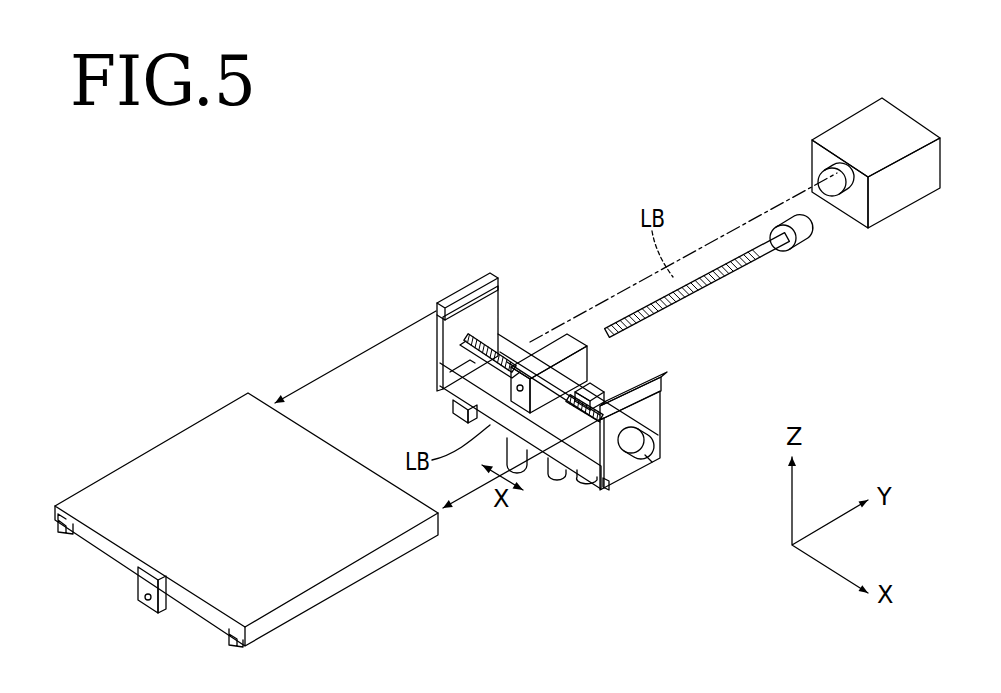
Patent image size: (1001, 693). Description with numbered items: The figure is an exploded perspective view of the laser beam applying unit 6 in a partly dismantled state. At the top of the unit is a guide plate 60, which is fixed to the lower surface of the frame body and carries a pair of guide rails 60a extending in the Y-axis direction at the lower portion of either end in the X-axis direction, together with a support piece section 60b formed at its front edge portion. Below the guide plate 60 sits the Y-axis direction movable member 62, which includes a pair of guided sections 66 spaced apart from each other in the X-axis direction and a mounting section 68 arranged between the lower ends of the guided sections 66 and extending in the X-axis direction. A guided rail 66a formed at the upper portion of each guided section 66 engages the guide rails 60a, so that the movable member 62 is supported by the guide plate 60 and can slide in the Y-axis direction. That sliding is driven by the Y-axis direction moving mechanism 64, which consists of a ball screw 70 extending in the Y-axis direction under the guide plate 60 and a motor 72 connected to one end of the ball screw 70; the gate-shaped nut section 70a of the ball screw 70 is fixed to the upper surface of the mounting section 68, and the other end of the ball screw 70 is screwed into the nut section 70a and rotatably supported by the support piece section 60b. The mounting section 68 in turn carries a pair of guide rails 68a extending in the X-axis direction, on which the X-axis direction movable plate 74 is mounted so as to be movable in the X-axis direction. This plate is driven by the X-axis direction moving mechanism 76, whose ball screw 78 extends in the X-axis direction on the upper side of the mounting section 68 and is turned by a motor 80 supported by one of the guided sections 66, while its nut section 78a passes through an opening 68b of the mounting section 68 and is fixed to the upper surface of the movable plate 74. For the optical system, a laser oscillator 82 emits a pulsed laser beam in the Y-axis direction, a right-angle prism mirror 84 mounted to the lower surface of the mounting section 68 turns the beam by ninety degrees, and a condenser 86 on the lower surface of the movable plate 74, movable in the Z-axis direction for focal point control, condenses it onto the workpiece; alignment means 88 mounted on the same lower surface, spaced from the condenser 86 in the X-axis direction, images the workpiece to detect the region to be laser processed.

The laser beam applying unit 6 is at (312, 336).
The guide plate 60 is at (168, 458).
The guide rails 60a is at (57, 530).
The support piece section 60b is at (137, 600).
The Y-axis direction movable member 62 is at (607, 492).
The Y-axis direction moving mechanism 64 is at (826, 257).
The guided sections 66 is at (482, 298).
The guided rail 66a is at (467, 292).
The mounting section 68 is at (513, 350).
The guide rails 68a is at (612, 478).
The opening 68b is at (453, 380).
The ball screw 70 is at (737, 268).
The nut section 70a is at (575, 366).
The motor 72 is at (808, 240).
The X-axis direction movable plate 74 is at (598, 462).
The X-axis direction moving mechanism 76 is at (658, 462).
The ball screw 78 is at (470, 342).
The nut section 78a is at (612, 372).
The motor 80 is at (647, 450).
The laser oscillator 82 is at (852, 128).
The right-angle prism mirror 84 is at (455, 412).
The condenser 86 is at (507, 450).
The alignment means 88 is at (553, 478).